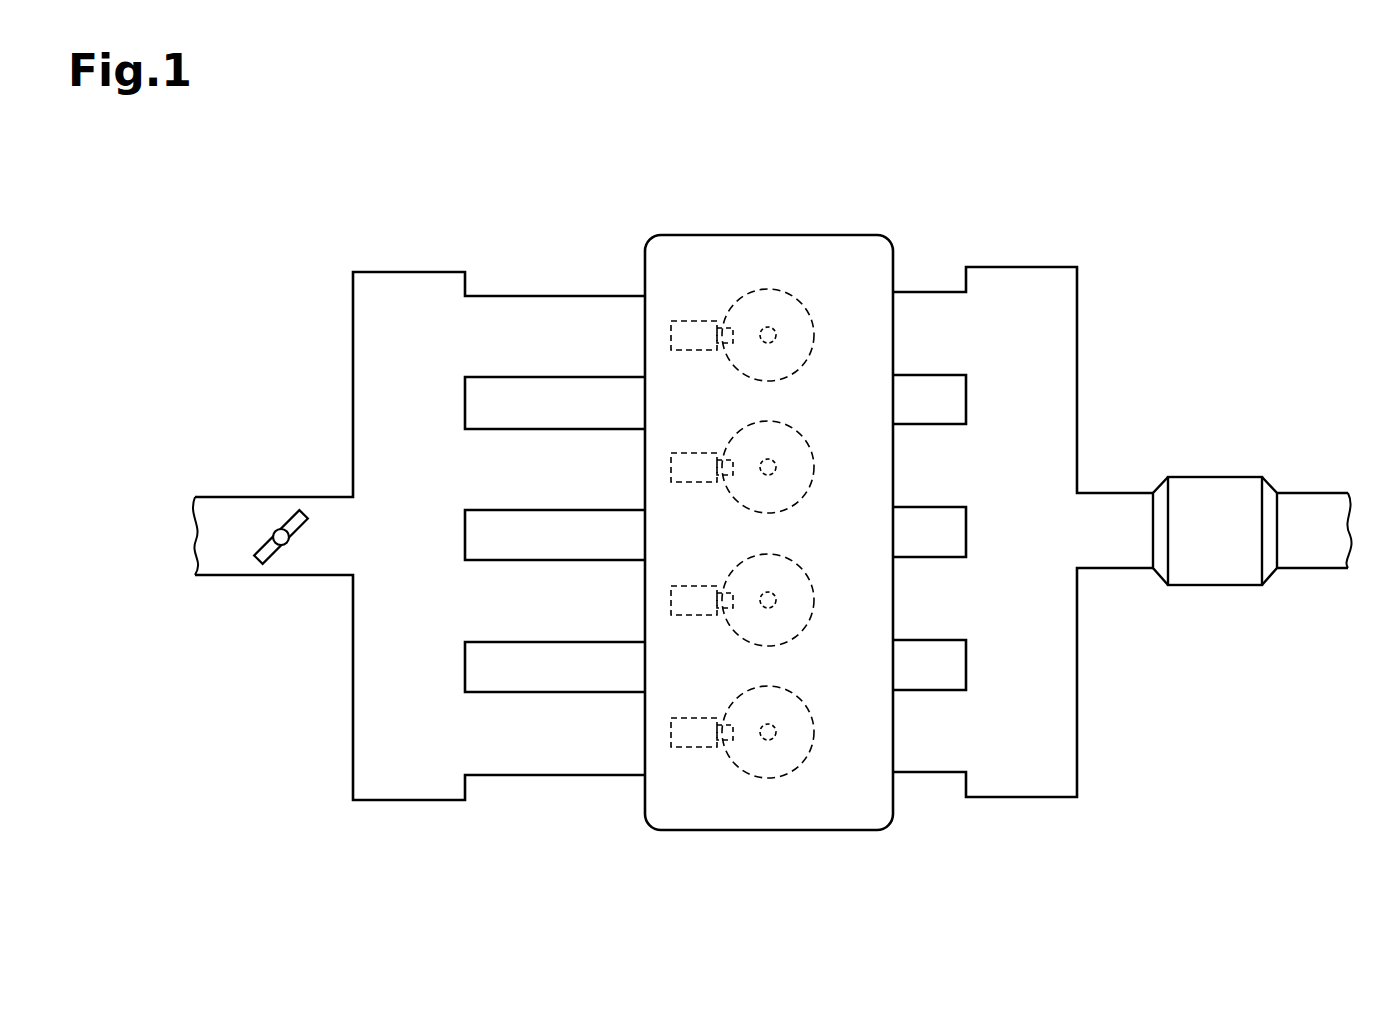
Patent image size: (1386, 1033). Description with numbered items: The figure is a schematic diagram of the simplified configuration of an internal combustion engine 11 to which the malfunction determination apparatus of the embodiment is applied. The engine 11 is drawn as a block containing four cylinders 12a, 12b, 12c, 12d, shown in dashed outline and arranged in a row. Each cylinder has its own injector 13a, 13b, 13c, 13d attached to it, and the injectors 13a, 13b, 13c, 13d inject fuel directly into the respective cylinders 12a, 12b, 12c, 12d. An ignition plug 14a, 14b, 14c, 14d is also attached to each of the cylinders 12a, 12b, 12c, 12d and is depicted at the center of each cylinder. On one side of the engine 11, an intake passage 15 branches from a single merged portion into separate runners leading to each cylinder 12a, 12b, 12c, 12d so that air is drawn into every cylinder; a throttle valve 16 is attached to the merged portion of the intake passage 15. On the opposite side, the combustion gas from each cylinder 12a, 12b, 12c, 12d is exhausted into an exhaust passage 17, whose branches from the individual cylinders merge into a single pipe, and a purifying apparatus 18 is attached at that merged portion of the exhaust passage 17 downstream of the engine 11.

The internal combustion engine 11 is at (848, 177).
The cylinder 12a is at (787, 293).
The cylinder 12b is at (787, 425).
The cylinder 12c is at (787, 558).
The cylinder 12d is at (787, 690).
The injector 13a is at (690, 321).
The injector 13b is at (690, 453).
The injector 13c is at (690, 586).
The injector 13d is at (690, 718).
The ignition plug 14a is at (770, 326).
The ignition plug 14b is at (770, 458).
The ignition plug 14c is at (770, 591).
The ignition plug 14d is at (770, 723).
The intake passage 15 is at (410, 272).
The throttle valve 16 is at (289, 546).
The exhaust passage 17 is at (1020, 267).
The purifying apparatus 18 is at (1216, 586).